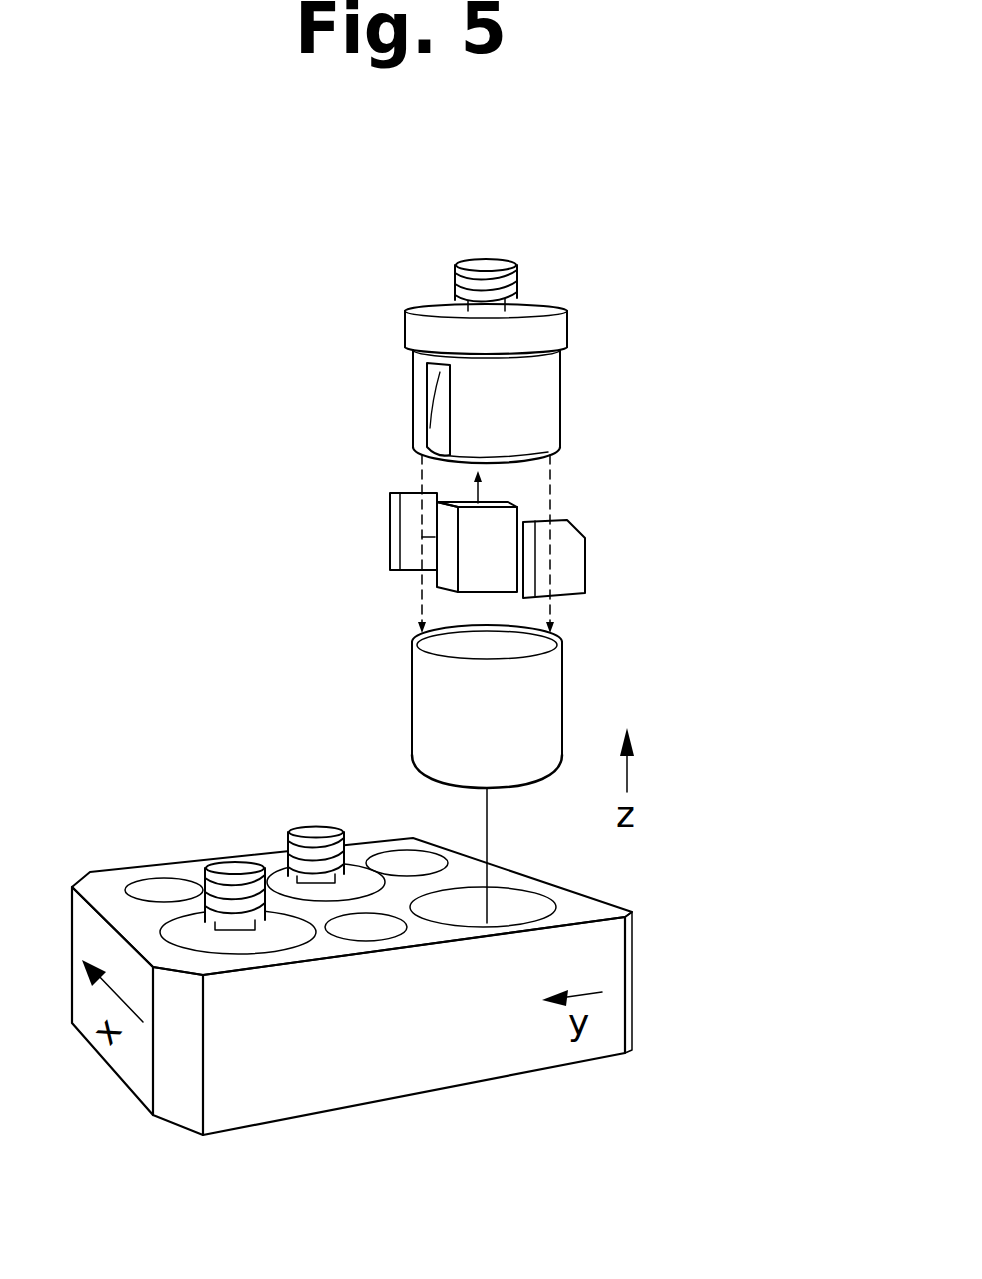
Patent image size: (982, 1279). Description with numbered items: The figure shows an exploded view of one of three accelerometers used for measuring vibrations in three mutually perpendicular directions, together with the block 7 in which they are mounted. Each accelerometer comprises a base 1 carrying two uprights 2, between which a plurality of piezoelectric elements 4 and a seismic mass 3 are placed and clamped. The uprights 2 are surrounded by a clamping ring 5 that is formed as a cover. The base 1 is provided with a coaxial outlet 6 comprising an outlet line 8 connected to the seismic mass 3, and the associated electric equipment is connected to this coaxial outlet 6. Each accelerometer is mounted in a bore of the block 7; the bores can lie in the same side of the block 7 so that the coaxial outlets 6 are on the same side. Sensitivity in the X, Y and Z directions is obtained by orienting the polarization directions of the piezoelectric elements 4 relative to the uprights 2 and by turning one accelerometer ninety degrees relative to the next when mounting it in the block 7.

The base 1 is at (570, 320).
The uprights 2 is at (413, 425).
The seismic mass 3 is at (443, 577).
The piezoelectric elements 4 is at (522, 558).
The clamping ring 5 is at (420, 704).
The coaxial outlet 6 is at (455, 285).
The block 7 is at (618, 978).
The outlet line 8 is at (415, 378).